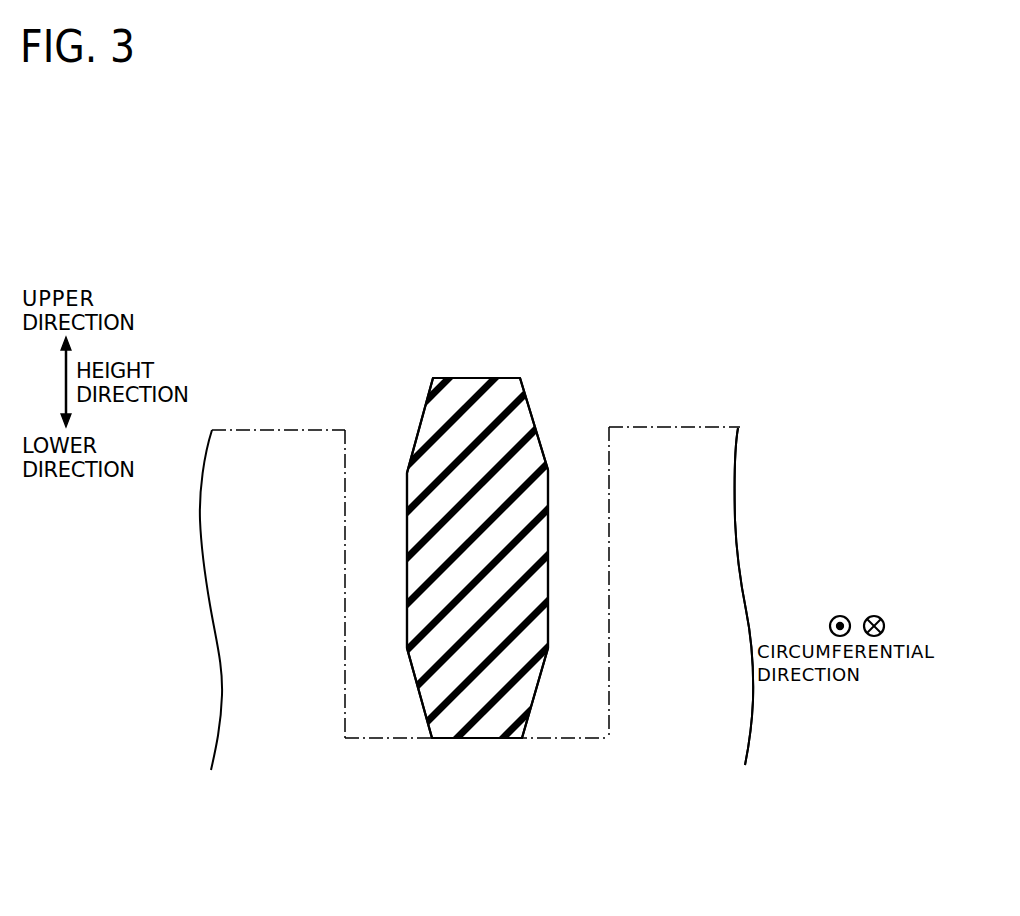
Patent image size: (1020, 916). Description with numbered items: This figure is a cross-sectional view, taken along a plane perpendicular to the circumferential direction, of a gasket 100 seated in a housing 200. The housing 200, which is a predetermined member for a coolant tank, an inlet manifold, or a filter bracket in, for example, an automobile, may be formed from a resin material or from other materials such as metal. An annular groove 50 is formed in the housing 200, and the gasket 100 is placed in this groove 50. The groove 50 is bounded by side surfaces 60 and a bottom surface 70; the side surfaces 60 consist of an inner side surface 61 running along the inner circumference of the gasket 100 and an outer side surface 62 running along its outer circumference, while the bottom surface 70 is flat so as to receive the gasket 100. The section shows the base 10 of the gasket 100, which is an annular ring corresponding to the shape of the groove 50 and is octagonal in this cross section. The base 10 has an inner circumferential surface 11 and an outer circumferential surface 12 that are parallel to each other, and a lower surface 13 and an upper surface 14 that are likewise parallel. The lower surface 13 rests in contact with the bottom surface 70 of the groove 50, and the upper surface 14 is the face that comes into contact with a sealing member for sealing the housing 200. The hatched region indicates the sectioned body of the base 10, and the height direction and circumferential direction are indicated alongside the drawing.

The base 10 is at (472, 399).
The inner circumferential surface 11 is at (549, 486).
The outer circumferential surface 12 is at (407, 490).
The lower surface 13 is at (478, 739).
The upper surface 14 is at (446, 379).
The annular groove 50 is at (580, 445).
The gasket 100 is at (552, 355).
The housing 200 is at (713, 412).
The side surfaces 60 is at (476, 599).
The inner side surface 61 is at (610, 510).
The outer side surface 62 is at (345, 511).
The bottom surface 70 is at (577, 738).